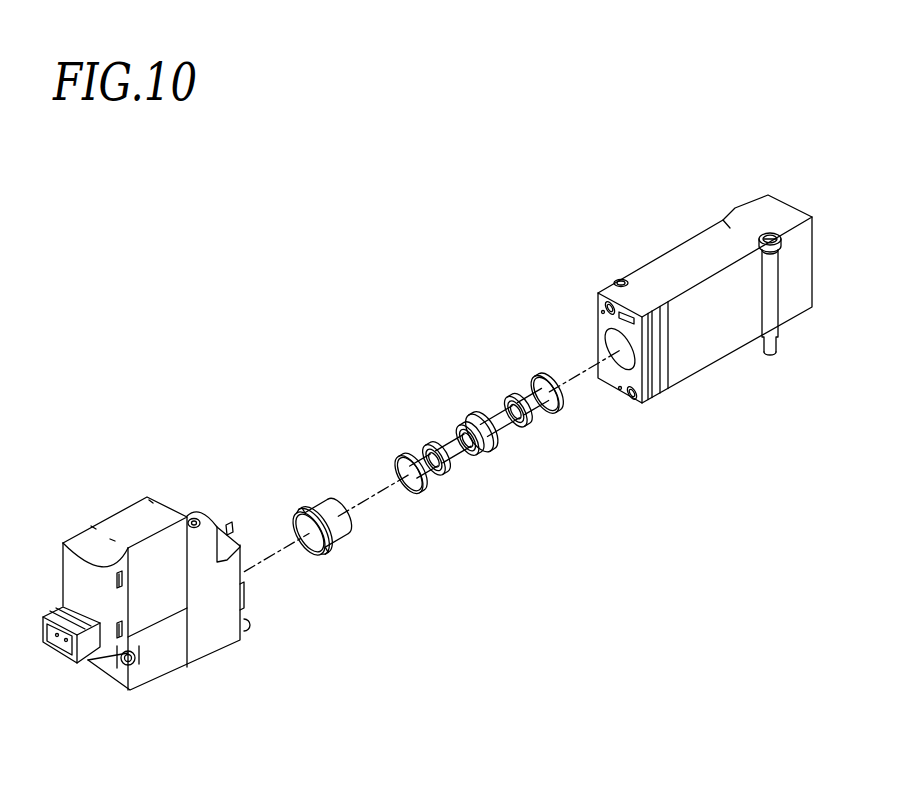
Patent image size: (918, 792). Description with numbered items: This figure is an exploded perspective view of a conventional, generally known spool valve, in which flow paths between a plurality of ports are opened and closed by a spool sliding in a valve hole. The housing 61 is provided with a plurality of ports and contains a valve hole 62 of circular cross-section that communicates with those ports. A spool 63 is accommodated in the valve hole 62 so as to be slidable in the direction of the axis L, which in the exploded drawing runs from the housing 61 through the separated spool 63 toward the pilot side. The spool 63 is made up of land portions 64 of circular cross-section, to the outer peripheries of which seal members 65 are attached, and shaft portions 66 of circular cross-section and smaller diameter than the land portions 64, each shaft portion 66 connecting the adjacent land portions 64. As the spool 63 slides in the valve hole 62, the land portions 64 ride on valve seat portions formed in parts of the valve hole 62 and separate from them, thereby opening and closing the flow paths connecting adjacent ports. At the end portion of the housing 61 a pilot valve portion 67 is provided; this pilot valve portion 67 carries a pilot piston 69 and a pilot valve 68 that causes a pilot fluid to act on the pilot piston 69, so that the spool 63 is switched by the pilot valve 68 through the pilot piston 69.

The housing 61 is at (695, 253).
The valve hole 62 is at (613, 340).
The spool 63 is at (470, 358).
The land portion 64 is at (492, 444).
The seal member 65 is at (453, 464).
The shaft portion 66 is at (458, 451).
The pilot valve portion 67 is at (150, 483).
The pilot valve 68 is at (127, 527).
The pilot piston 69 is at (305, 523).
The axis L is at (370, 496).